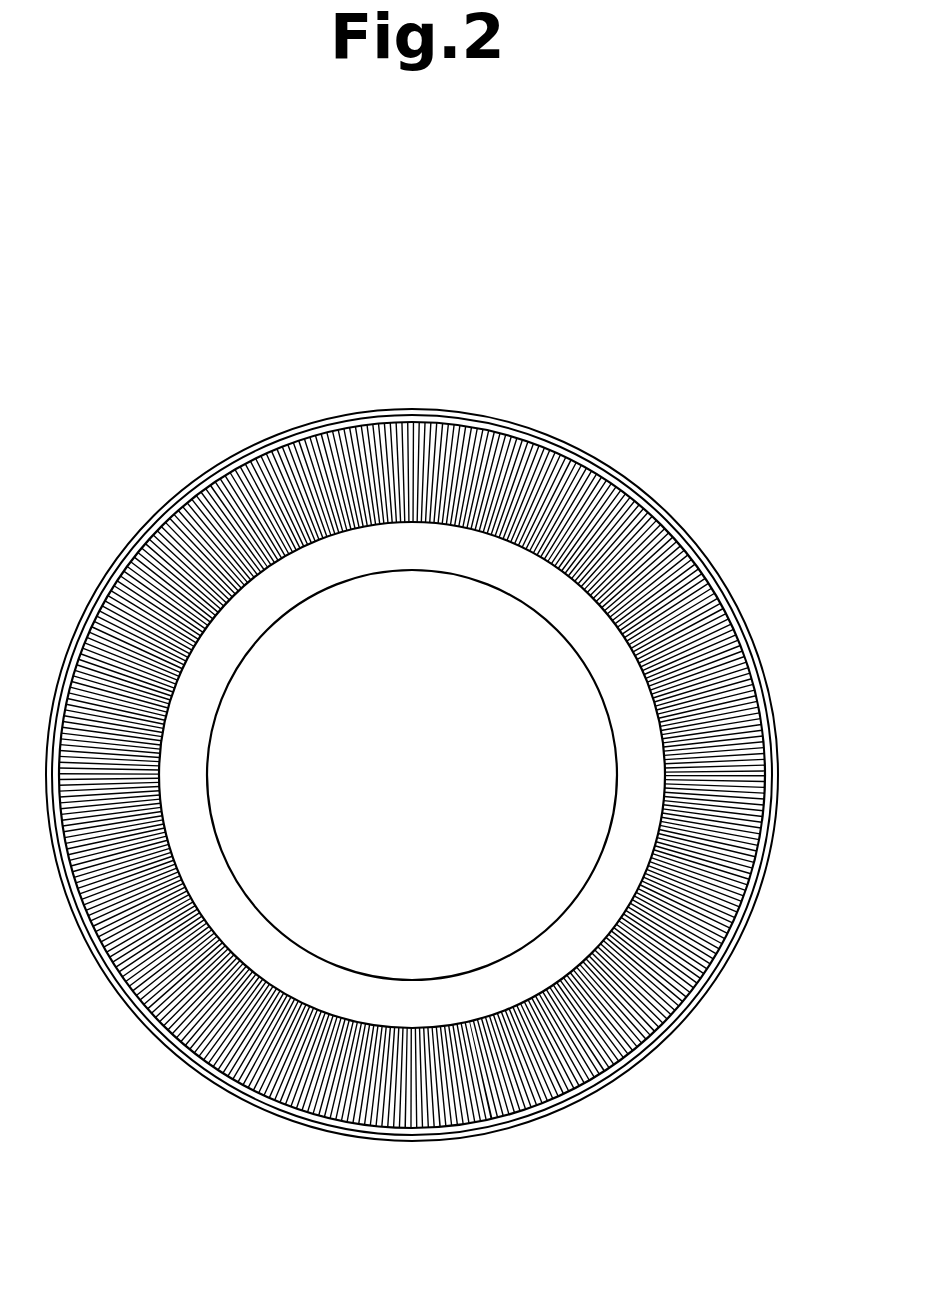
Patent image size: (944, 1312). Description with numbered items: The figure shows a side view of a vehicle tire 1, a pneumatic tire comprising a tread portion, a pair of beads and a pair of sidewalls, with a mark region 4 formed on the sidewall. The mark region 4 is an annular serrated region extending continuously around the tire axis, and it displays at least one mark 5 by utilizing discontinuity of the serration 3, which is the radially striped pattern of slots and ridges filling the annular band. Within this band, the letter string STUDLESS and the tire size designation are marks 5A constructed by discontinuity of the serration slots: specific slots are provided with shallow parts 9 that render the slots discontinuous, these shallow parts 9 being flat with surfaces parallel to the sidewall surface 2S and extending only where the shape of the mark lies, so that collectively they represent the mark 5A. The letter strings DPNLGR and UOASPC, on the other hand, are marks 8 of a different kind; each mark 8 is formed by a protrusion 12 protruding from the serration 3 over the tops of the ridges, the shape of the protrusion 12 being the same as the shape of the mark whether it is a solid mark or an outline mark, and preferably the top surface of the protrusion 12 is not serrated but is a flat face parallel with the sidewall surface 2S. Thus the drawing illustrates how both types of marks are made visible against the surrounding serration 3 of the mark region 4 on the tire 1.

The vehicle tire 1 is at (722, 441).
The sidewall surface 2S is at (603, 683).
The serration 3 is at (712, 686).
The mark region 4 is at (680, 796).
The mark 5 is at (412, 701).
The mark 5A is at (532, 462).
The mark 8 is at (214, 567).
The shallow parts 9 is at (437, 448).
The protrusion 12 is at (228, 525).